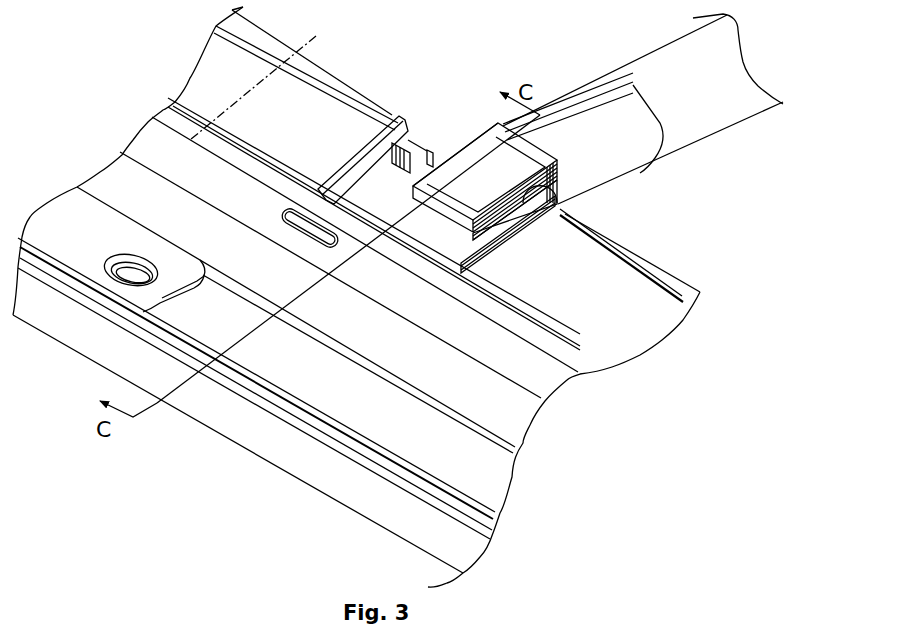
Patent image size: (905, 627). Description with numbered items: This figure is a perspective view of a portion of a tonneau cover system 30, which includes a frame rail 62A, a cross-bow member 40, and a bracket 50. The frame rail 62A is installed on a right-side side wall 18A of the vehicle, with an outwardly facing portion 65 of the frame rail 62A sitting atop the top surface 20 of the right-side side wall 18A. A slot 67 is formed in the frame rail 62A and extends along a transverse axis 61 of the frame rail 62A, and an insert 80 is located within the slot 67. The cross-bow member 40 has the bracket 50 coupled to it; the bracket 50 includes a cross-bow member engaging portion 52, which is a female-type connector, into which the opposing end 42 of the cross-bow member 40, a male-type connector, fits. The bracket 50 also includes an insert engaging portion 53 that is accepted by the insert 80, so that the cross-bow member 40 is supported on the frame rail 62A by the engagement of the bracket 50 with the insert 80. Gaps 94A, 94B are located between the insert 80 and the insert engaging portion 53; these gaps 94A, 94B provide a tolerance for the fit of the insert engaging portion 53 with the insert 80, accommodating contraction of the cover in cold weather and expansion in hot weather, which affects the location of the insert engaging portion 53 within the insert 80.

The top surface 20 is at (353, 424).
The right-side side wall 18A is at (537, 414).
The tonneau cover system 30 is at (139, 79).
The cross-bow member 40 is at (704, 137).
The opposing end 42 is at (592, 135).
The bracket 50 is at (587, 77).
The cross-bow member engaging portion 52 is at (603, 173).
The insert engaging portion 53 is at (475, 140).
The transverse axis 61 is at (269, 77).
The frame rail 62A is at (675, 267).
The outwardly facing portion 65 is at (630, 325).
The slot 67 is at (372, 133).
The insert 80 is at (473, 252).
The gap 94A is at (428, 148).
The gap 94B is at (546, 187).